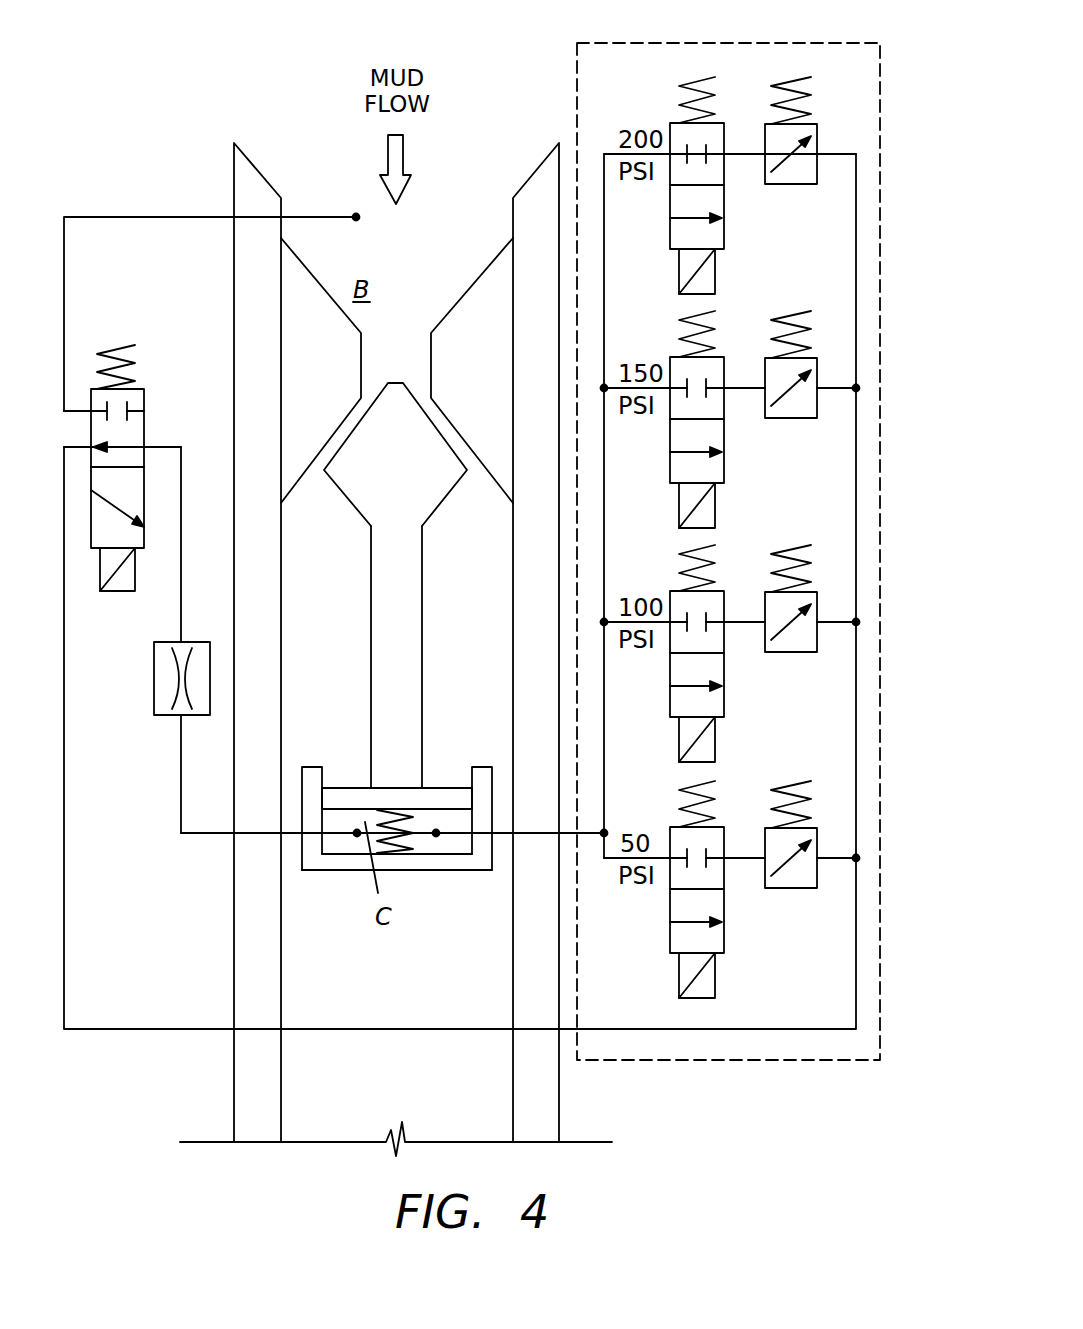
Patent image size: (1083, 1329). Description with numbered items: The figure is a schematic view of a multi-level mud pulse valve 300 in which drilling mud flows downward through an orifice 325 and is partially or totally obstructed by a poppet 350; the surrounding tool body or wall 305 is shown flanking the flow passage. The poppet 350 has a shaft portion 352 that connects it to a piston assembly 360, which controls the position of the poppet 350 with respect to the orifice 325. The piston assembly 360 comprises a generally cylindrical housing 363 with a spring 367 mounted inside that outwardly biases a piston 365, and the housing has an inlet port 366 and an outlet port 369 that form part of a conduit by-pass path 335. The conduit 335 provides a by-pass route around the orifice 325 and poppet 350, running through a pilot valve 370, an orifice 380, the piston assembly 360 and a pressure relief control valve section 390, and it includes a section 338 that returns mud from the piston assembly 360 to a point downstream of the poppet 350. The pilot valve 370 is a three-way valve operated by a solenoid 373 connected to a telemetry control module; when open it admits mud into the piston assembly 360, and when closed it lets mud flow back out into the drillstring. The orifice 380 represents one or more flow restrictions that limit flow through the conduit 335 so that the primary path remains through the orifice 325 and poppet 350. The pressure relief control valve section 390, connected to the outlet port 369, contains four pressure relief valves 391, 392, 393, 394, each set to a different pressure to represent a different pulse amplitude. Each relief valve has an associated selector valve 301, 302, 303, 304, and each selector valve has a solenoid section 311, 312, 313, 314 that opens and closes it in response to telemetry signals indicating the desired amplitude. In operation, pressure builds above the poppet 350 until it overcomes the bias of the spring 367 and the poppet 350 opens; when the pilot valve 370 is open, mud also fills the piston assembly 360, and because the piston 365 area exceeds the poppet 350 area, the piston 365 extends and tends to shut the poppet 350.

The mud pulse valve 300 is at (244, 78).
The tool housing wall 305 is at (232, 275).
The orifice 325 is at (482, 275).
The poppet 350 is at (442, 480).
The shaft portion 352 is at (412, 637).
The piston assembly 360 is at (338, 870).
The cylindrical housing 363 is at (313, 767).
The piston 365 is at (347, 795).
The inlet port 366 is at (300, 835).
The spring 367 is at (408, 846).
The outlet port 369 is at (499, 836).
The pilot valve 370 is at (146, 399).
The solenoid 373 is at (117, 591).
The orifice 380 is at (154, 677).
The conduit path 335 is at (181, 747).
The section 338 is at (64, 925).
The pressure relief control valve section 390 is at (797, 43).
The selector valve 301 is at (724, 249).
The selector valve 302 is at (724, 483).
The selector valve 303 is at (724, 717).
The selector valve 304 is at (724, 953).
The solenoid section 311 is at (679, 270).
The solenoid section 312 is at (679, 504).
The solenoid section 313 is at (679, 738).
The solenoid section 314 is at (679, 974).
The pressure relief valve 391 is at (787, 184).
The pressure relief valve 392 is at (787, 418).
The pressure relief valve 393 is at (787, 652).
The pressure relief valve 394 is at (787, 888).